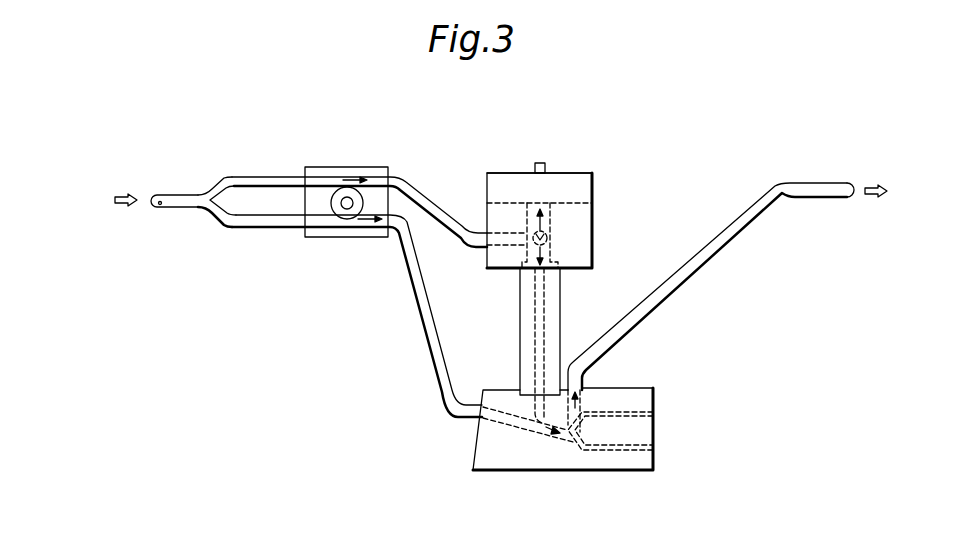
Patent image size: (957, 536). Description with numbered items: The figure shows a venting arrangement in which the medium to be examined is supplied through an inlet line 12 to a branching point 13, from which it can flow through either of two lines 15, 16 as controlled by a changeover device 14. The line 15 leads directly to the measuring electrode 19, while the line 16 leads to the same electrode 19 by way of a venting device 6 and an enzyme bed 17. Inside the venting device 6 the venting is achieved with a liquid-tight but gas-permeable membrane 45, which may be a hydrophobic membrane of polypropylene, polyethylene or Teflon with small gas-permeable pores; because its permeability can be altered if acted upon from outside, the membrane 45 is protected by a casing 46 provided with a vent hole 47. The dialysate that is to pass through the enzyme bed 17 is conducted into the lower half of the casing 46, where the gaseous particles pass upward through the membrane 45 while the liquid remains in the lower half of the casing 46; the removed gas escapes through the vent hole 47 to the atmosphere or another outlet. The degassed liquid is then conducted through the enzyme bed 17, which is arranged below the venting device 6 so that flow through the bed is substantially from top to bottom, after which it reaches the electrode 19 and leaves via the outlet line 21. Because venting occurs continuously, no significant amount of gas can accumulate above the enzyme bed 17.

The inlet line 12 is at (178, 197).
The branching point 13 is at (226, 136).
The line 16 is at (291, 125).
The line 15 is at (263, 222).
The changeover device 14 is at (381, 129).
The venting device 6 is at (638, 214).
The membrane 45 is at (553, 202).
The casing 46 is at (658, 156).
The vent hole 47 is at (551, 129).
The enzyme bed 17 is at (618, 293).
The outlet conduit 21 is at (773, 269).
The measuring electrode 19 is at (715, 406).